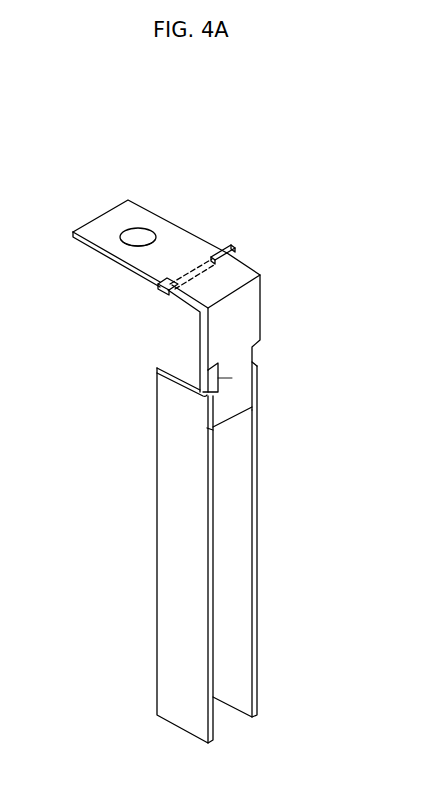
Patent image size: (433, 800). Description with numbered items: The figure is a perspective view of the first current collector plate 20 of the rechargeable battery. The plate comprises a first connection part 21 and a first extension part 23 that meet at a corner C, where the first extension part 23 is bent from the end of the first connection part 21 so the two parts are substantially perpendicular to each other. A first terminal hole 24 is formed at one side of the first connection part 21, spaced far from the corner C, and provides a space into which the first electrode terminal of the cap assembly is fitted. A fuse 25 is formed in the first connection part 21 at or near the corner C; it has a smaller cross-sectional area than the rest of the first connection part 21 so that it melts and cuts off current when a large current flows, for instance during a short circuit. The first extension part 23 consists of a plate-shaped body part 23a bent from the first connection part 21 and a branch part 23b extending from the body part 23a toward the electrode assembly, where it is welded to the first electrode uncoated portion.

The first current collector plate 20 is at (302, 237).
The first connection part 21 is at (108, 220).
The first terminal hole 24 is at (139, 232).
The fuse 25 is at (232, 243).
The corner C is at (235, 293).
The first extension part 23 is at (262, 537).
The body part 23a is at (203, 378).
The branch part 23b is at (162, 532).